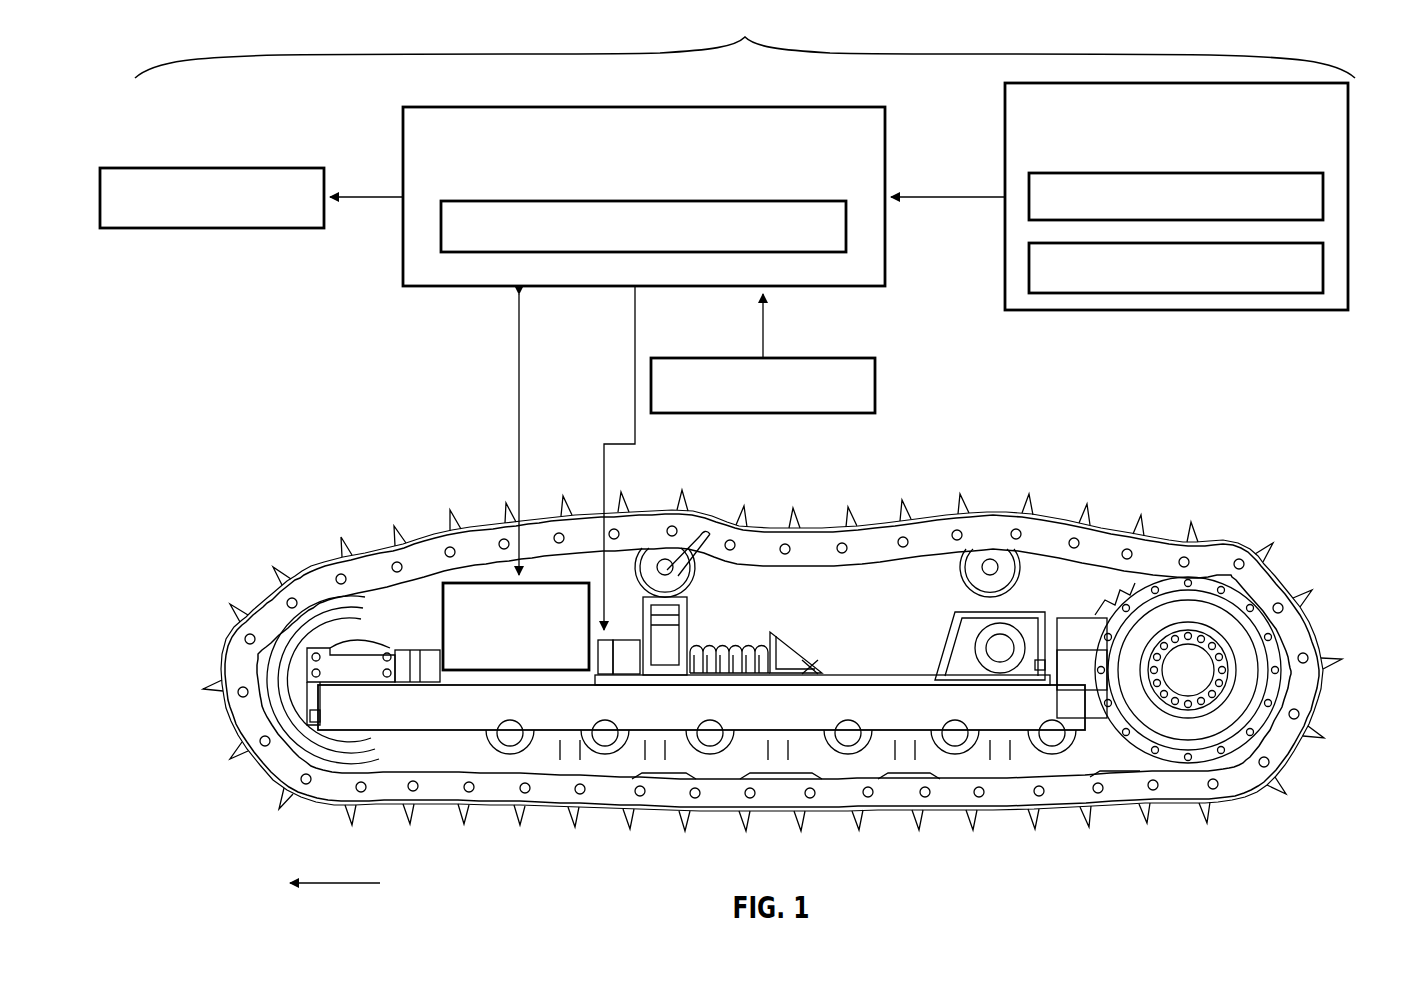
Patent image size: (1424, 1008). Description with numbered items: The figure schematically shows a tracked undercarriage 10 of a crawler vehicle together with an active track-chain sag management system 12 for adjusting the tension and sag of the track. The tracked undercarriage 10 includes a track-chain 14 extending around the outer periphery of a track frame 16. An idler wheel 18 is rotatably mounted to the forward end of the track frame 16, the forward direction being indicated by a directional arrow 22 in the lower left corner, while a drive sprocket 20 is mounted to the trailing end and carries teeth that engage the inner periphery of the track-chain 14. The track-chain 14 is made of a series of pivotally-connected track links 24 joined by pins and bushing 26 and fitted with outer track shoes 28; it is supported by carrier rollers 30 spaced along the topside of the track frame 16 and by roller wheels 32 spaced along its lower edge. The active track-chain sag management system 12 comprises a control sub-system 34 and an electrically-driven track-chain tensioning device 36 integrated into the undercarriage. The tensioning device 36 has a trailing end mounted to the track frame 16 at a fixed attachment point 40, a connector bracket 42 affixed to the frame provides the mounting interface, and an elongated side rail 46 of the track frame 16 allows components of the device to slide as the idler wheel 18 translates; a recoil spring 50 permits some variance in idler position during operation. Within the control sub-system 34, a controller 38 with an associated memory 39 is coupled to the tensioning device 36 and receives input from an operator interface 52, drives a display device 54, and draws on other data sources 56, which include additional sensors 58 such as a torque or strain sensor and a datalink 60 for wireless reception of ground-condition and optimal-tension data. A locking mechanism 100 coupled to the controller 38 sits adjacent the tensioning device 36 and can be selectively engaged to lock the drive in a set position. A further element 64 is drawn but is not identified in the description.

The tracked undercarriage 10 is at (205, 497).
The active track-chain sag management system 12 is at (131, 57).
The track-chain 14 is at (1050, 518).
The track frame 16 is at (797, 712).
The idler wheel 18 is at (343, 598).
The drive sprocket 20 is at (1225, 628).
The directional arrow 22 is at (330, 883).
The track links 24 is at (732, 783).
The pins and bushing 26 is at (230, 633).
The outer track shoes 28 is at (318, 805).
The carrier rollers 30 is at (685, 567).
The roller wheels 32 is at (957, 748).
The control sub-system 34 is at (745, 37).
The electrically-driven track-chain tensioning device 36 is at (628, 630).
The controller 38 is at (454, 106).
The memory 39 is at (491, 200).
The fixed attachment point 40 is at (812, 667).
The connector bracket 42 is at (782, 643).
The elongated side rail 46 is at (546, 712).
The recoil spring 50 is at (753, 645).
The operator interface 52 is at (704, 357).
The display device 54 is at (152, 166).
The other data sources 56 is at (1350, 128).
The additional sensors 58 is at (1325, 196).
The datalink 60 is at (1325, 267).
The idler yoke 64 is at (441, 648).
The locking mechanism 100 is at (493, 582).